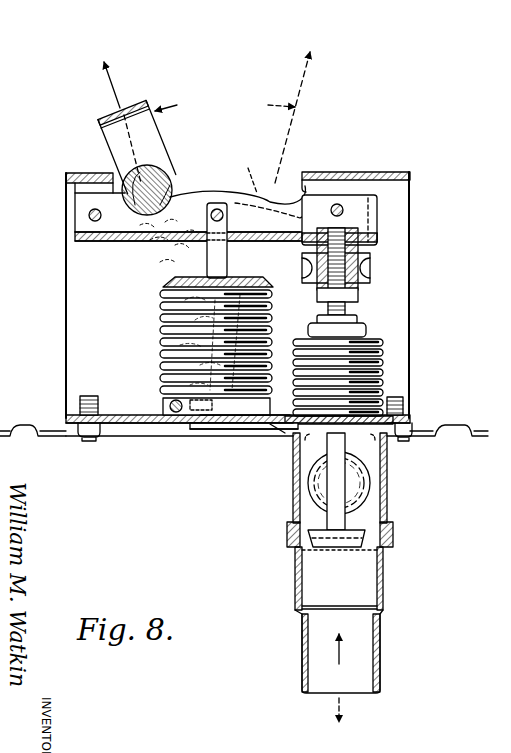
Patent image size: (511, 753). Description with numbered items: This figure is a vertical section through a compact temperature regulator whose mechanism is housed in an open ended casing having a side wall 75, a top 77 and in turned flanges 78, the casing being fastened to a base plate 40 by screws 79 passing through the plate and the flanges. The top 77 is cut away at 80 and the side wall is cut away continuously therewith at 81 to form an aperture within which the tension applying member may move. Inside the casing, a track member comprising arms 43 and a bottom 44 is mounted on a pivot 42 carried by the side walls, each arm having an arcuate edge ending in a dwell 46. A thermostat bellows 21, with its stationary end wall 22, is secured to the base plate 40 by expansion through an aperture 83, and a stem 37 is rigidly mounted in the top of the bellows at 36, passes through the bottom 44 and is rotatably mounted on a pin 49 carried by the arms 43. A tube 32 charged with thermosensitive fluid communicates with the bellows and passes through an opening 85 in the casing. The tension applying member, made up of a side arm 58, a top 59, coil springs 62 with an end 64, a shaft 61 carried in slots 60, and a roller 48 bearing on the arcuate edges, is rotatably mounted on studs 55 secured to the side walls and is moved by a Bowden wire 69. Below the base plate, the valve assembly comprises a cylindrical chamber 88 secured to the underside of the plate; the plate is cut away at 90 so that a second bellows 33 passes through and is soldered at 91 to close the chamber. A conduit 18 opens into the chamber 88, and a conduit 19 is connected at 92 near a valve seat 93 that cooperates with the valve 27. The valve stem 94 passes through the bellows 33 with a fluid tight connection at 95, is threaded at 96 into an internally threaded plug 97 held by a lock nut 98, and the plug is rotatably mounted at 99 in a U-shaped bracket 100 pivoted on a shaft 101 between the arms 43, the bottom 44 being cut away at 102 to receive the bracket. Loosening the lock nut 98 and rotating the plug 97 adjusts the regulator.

The conduit 18 is at (366, 480).
The conduit 19 is at (372, 662).
The bellows 21 is at (167, 377).
The stationary end wall 22 is at (220, 425).
The valve disk 27 is at (368, 547).
The tube 32 is at (182, 417).
The second bellows 33 is at (380, 370).
The spherical socket 36 is at (232, 283).
The stem 37 is at (221, 265).
The base plate 40 is at (482, 436).
The pivot pin 42 is at (88, 212).
The arms 43 is at (100, 227).
The bottom 44 is at (132, 242).
The dwell 46 is at (277, 197).
The roller 48 is at (170, 185).
The pin 49 is at (219, 208).
The studs 55 is at (205, 433).
The side arm 58 is at (150, 140).
The transverse member 59 is at (140, 100).
The slots 60 is at (144, 176).
The rod 61 is at (150, 188).
The coil springs 62 is at (197, 193).
The spring end 64 is at (235, 233).
The Bowden wire 69 is at (270, 433).
The side wall 75 is at (76, 346).
The top 77 is at (350, 174).
The in turned flanges 78 is at (100, 413).
The screws 79 is at (78, 433).
The cut away 80 is at (303, 180).
The cut away 81 is at (255, 170).
The aperture 83 is at (253, 424).
The opening 85 is at (170, 410).
The cylindrical chamber 88 is at (383, 511).
The cut away 90 is at (382, 405).
The soldering 91 is at (402, 423).
The connection point 92 is at (388, 528).
The valve seat 93 is at (393, 543).
The valve stem 94 is at (338, 478).
The fluid tight connection 95 is at (355, 320).
The threaded end 96 is at (344, 308).
The plug 97 is at (372, 249).
The lock nut 98 is at (357, 295).
The rotatable mounting 99 is at (372, 233).
The U-shaped bracket 100 is at (372, 212).
The shaft 101 is at (340, 207).
The cut away 102 is at (306, 256).